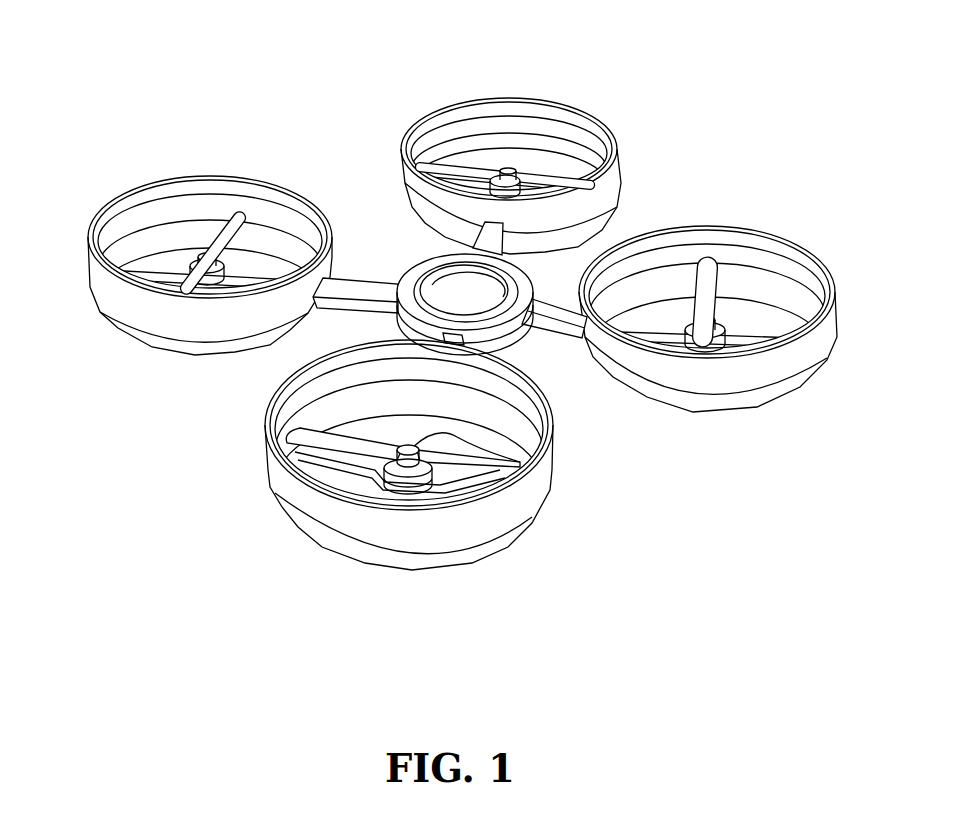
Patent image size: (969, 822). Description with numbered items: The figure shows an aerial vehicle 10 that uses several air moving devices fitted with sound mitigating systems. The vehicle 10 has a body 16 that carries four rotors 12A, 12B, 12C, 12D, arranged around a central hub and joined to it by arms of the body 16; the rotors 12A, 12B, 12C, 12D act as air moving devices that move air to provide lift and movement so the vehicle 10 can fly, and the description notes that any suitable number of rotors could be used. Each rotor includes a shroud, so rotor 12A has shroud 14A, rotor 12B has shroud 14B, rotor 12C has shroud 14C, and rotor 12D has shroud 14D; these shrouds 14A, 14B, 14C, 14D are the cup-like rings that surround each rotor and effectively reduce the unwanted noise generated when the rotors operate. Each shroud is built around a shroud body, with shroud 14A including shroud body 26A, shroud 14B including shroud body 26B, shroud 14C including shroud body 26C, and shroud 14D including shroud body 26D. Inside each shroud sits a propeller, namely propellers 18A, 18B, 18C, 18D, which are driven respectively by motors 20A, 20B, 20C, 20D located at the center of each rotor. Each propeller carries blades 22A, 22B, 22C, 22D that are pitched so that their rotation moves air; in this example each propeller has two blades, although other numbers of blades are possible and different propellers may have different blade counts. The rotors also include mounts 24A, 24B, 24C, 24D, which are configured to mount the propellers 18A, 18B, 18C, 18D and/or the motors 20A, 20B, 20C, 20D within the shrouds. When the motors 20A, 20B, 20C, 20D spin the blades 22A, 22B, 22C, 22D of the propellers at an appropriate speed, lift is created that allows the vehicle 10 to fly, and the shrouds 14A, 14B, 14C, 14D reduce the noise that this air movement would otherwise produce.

The aerial vehicle 10 is at (88, 242).
The rotor 12A is at (200, 266).
The rotor 12B is at (538, 136).
The rotor 12C is at (762, 318).
The rotor 12D is at (426, 490).
The shroud 14A is at (200, 249).
The shroud 14B is at (551, 167).
The shroud 14C is at (727, 298).
The shroud 14D is at (409, 533).
The body 16 is at (117, 328).
The propeller 18A is at (187, 272).
The propeller 18B is at (508, 163).
The propeller 18C is at (672, 297).
The propeller 18D is at (503, 470).
The motor 20A is at (217, 290).
The motor 20B is at (488, 188).
The motor 20C is at (752, 345).
The motor 20D is at (407, 480).
The blades 22A is at (250, 292).
The blades 22B is at (578, 180).
The blades 22C is at (702, 347).
The blades 22D is at (325, 447).
The mount 24A is at (145, 275).
The mount 24B is at (530, 178).
The mount 24C is at (740, 328).
The mount 24D is at (348, 482).
The shroud body 26A is at (200, 249).
The shroud body 26B is at (640, 138).
The shroud body 26C is at (800, 250).
The shroud body 26D is at (447, 567).